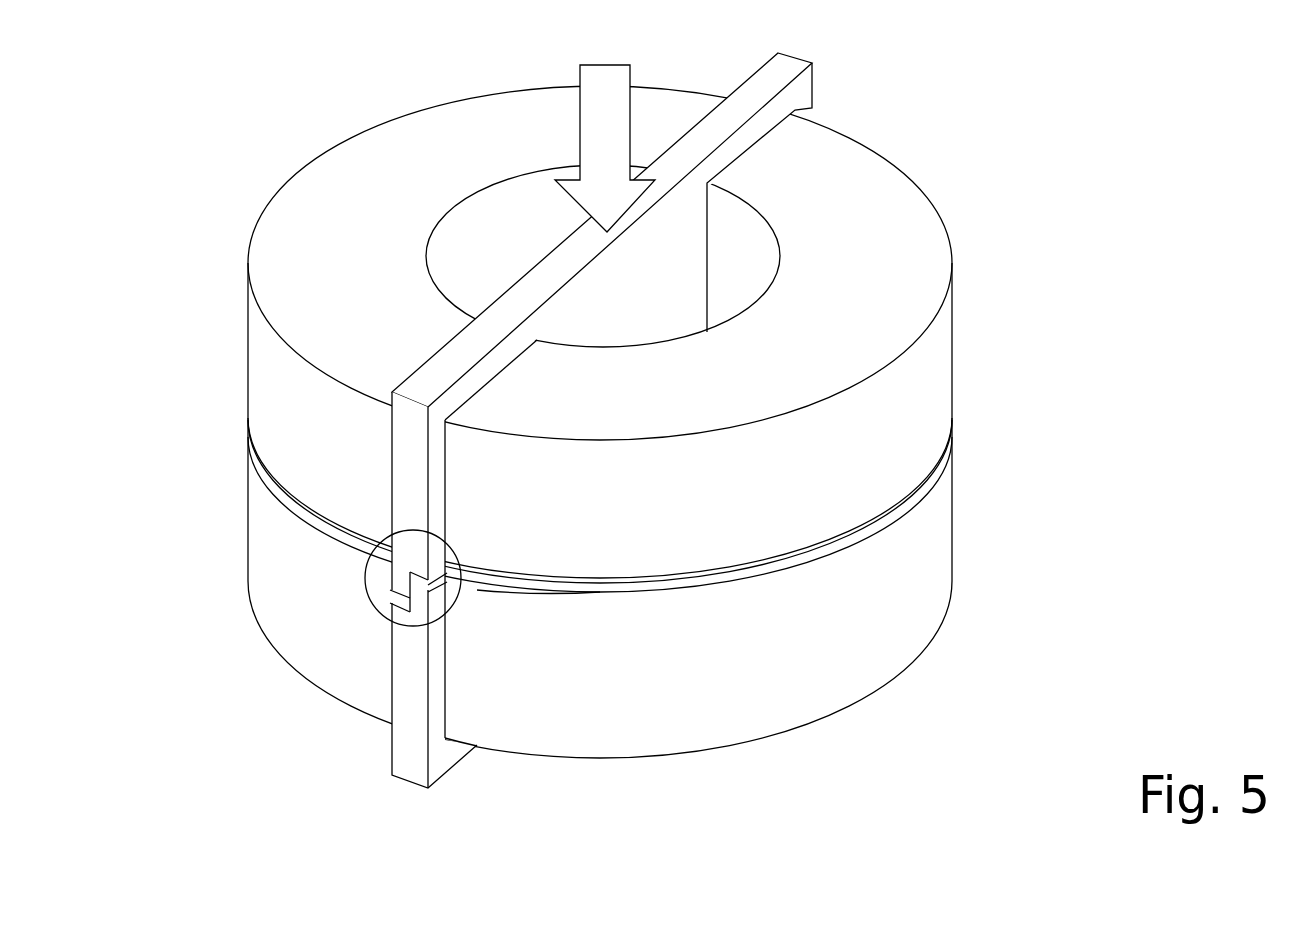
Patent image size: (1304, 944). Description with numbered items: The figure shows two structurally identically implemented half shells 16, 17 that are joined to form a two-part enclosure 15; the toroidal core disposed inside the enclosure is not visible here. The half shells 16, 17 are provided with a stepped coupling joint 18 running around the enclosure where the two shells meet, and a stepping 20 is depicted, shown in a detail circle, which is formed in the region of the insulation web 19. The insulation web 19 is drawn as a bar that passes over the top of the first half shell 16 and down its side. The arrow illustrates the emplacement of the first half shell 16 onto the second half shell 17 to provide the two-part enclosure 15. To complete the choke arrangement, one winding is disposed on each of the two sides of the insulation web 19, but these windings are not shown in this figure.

The two-part enclosure 15 is at (661, 436).
The first half shell 16 is at (875, 208).
The second half shell 17 is at (625, 602).
The stepped coupling joint 18 is at (535, 583).
The insulation web 19 is at (440, 362).
The stepping 20 is at (365, 597).